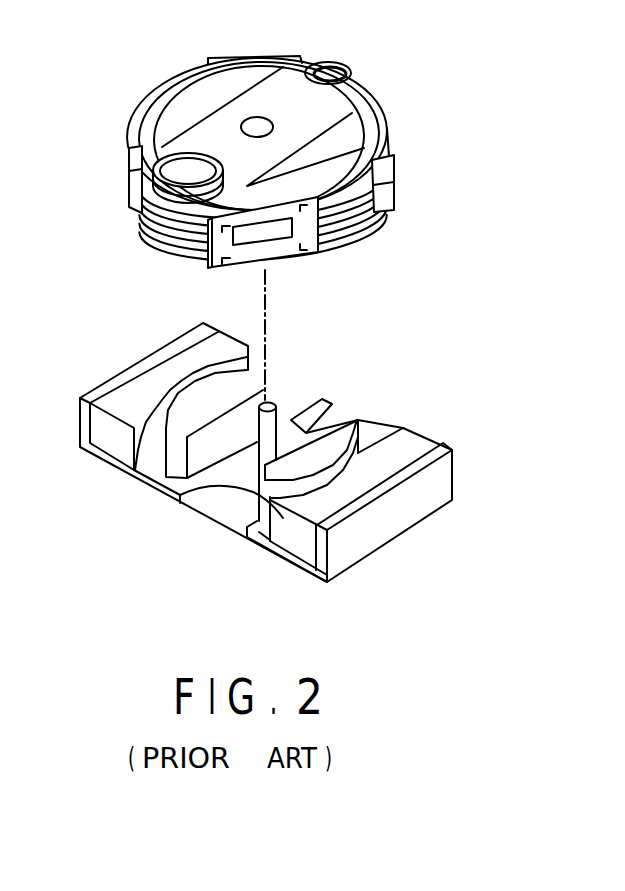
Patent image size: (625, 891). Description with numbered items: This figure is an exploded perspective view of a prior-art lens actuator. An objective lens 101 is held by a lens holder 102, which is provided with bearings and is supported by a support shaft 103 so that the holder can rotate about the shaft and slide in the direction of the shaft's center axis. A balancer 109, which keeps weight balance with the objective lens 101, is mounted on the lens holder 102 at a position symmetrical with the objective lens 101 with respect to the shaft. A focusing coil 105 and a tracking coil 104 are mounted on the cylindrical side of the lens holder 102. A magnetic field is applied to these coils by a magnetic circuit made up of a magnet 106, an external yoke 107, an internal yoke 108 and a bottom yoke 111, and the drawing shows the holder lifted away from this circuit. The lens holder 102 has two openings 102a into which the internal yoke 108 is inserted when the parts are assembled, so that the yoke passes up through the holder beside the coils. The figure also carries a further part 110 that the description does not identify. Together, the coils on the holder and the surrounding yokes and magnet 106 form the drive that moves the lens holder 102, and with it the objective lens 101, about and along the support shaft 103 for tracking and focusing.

The objective lens 101 is at (140, 160).
The lens holder 102 is at (352, 97).
The openings 102a is at (193, 103).
The support shaft 103 is at (274, 405).
The tracking coil 104 is at (229, 57).
The focusing coil 105 is at (153, 238).
The magnet 106 is at (418, 445).
The external yoke 107 is at (445, 482).
The internal yoke 108 is at (252, 372).
The balancer 109 is at (343, 62).
The hole 110 is at (258, 127).
The bottom yoke 111 is at (160, 477).